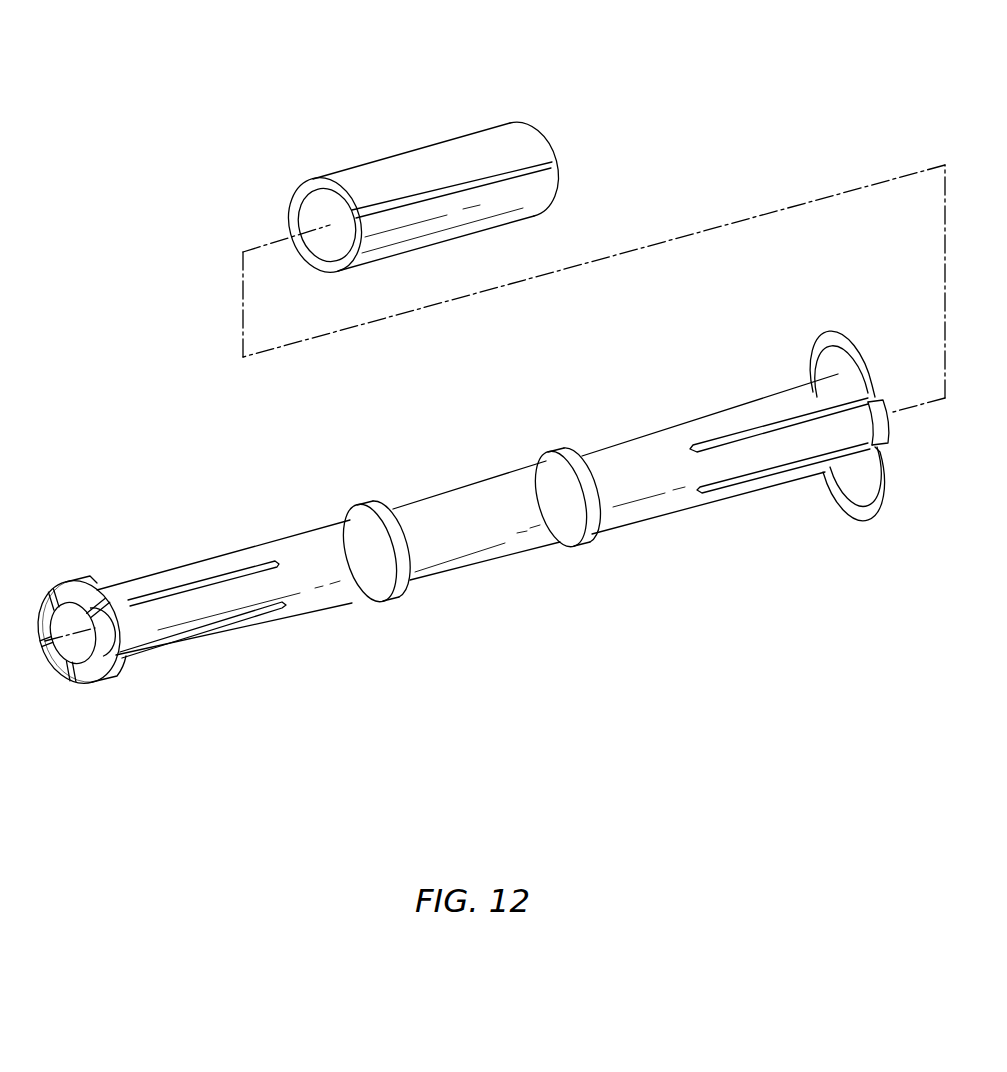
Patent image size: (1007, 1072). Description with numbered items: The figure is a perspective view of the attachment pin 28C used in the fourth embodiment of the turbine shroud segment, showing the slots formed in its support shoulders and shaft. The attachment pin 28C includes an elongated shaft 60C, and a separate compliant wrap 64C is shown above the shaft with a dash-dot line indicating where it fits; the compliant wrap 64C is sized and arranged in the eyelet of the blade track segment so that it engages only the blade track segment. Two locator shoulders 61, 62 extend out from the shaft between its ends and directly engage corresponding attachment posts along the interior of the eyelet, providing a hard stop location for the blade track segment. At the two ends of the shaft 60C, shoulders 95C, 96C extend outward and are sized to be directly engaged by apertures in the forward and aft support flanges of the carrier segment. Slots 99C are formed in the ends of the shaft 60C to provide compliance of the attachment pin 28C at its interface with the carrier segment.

The attachment pin 28C is at (458, 533).
The compliant wrap 64C is at (428, 140).
The shaft 60C is at (56, 651).
The shoulder 95C is at (105, 696).
The shoulder 96C is at (859, 492).
The slots 99C is at (130, 600).
The locator shoulder 61 is at (354, 492).
The locator shoulder 62 is at (554, 438).